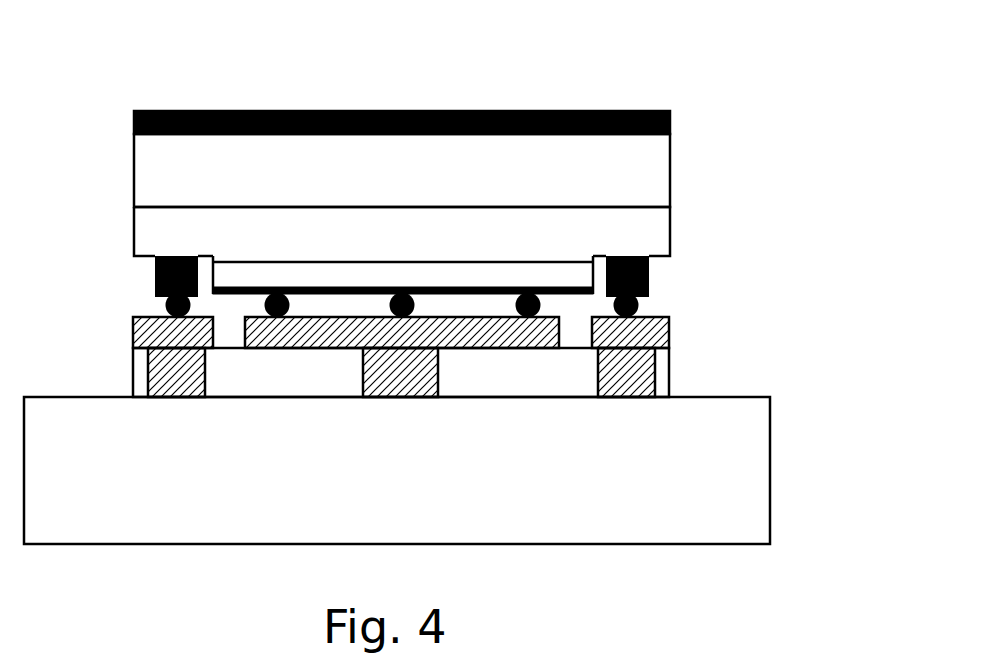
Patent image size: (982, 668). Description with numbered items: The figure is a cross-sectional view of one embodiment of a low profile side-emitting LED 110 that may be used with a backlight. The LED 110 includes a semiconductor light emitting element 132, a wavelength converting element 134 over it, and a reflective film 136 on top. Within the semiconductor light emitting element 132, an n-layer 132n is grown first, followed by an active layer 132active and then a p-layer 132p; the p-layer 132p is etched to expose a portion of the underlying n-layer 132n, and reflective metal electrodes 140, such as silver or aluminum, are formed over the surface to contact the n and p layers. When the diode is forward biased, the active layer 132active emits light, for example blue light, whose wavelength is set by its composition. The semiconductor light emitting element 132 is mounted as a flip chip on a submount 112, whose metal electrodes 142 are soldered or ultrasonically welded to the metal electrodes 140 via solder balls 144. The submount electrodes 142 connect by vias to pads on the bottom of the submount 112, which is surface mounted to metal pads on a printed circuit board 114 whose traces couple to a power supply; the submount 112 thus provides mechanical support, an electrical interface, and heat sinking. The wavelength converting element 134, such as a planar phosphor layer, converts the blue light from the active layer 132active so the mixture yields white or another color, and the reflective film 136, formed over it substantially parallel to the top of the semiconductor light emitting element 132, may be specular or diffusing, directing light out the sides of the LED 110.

The low profile side-emitting LED 110 is at (118, 70).
The semiconductor light emitting element 132 is at (97, 245).
The reflective film 136 is at (672, 129).
The wavelength converting element 134 is at (672, 176).
The n-layer 132n is at (672, 233).
The active layer 132active is at (328, 262).
The p-layer 132p is at (270, 272).
The reflective metal electrodes 140 is at (603, 258).
The solder balls 144 is at (538, 302).
The submount metal electrodes 142 is at (675, 320).
The submount 112 is at (669, 372).
The printed circuit board 114 is at (418, 481).